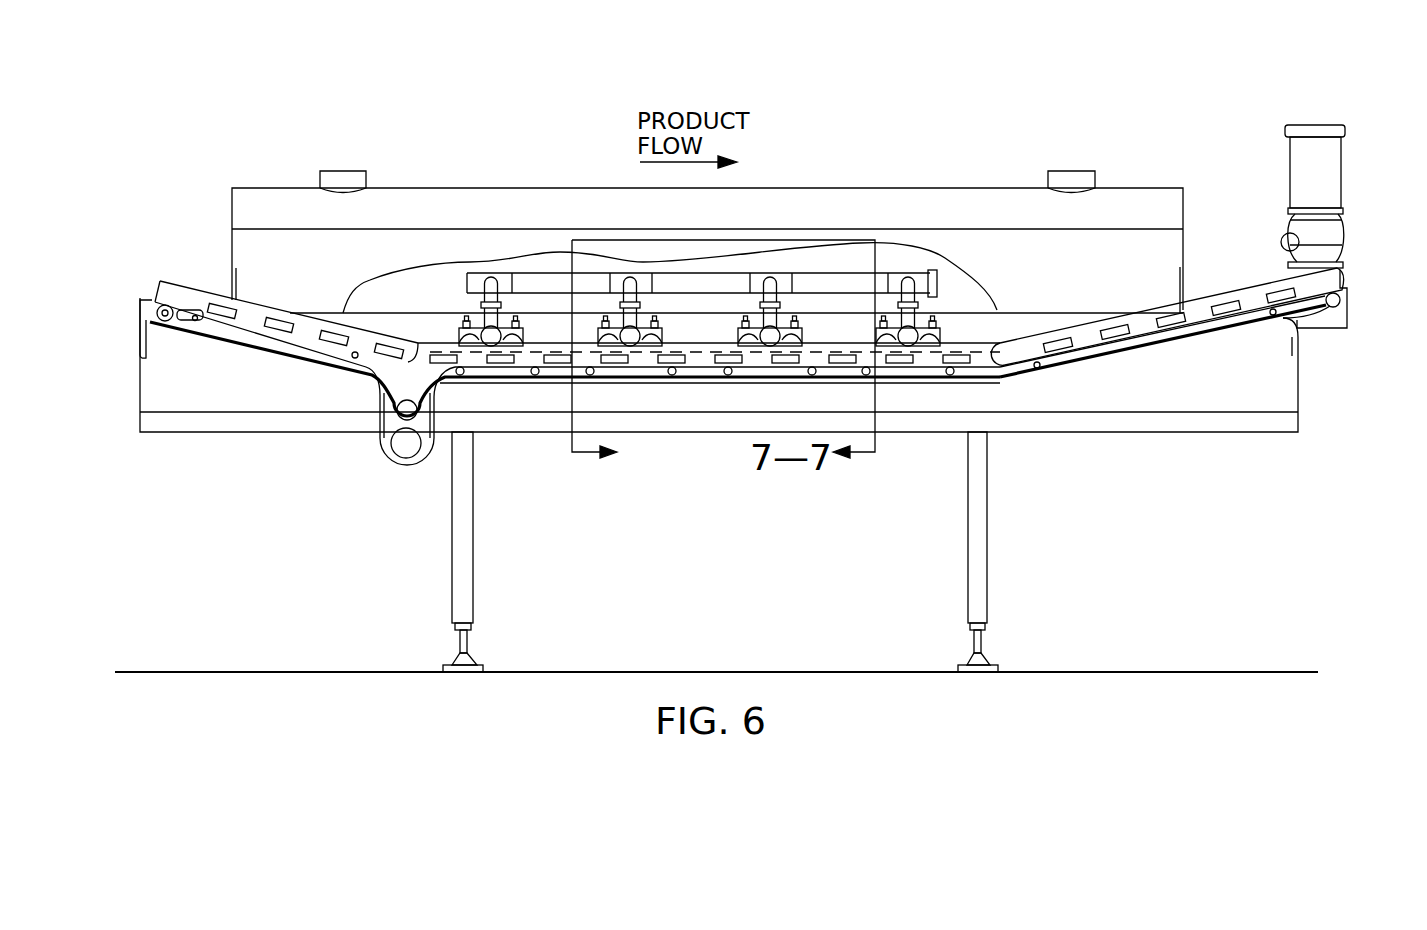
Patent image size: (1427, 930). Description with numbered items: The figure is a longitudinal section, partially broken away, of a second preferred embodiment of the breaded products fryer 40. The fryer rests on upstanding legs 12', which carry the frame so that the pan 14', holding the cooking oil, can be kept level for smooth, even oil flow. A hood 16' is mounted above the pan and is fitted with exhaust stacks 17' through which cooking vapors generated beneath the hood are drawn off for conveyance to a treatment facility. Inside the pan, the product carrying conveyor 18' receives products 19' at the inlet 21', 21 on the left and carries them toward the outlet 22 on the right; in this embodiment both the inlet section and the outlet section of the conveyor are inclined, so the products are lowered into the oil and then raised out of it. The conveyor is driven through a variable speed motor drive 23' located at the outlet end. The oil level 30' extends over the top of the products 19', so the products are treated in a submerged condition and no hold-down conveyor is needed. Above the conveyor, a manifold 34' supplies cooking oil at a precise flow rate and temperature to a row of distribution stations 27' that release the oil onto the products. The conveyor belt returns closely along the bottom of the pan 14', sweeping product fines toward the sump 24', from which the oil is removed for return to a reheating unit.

The fryer 40 is at (810, 166).
The upstanding legs 12' is at (781, 552).
The pan 14' is at (772, 365).
The hood 16' is at (707, 209).
The exhaust stack 17' is at (707, 158).
The product carrying conveyor 18' is at (259, 311).
The products 19' is at (205, 358).
The inlet 21' is at (115, 329).
The inlet 21 is at (699, 395).
The outlet 22 is at (1345, 281).
The variable speed motor drive 23' is at (1327, 166).
The sump 24' is at (400, 477).
The distribution stations 27' is at (727, 233).
The oil level 30' is at (575, 392).
The manifold 34' is at (702, 221).